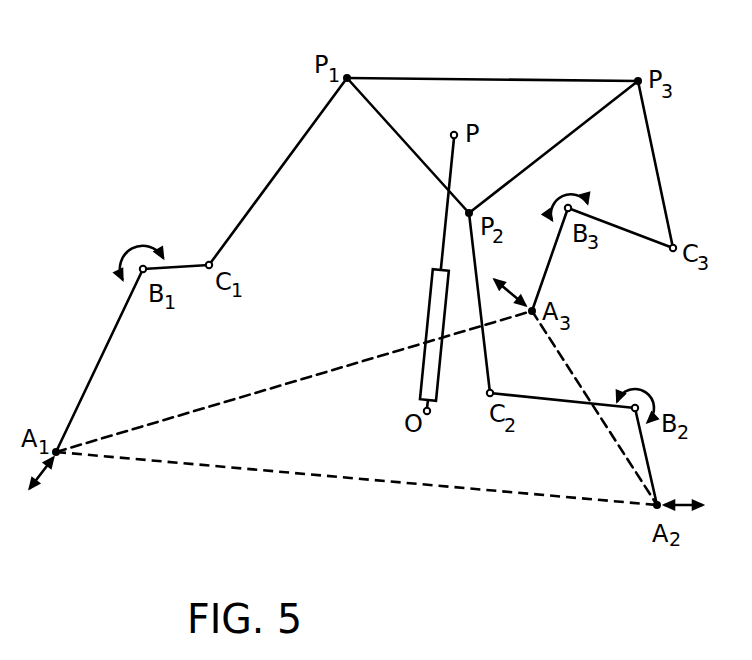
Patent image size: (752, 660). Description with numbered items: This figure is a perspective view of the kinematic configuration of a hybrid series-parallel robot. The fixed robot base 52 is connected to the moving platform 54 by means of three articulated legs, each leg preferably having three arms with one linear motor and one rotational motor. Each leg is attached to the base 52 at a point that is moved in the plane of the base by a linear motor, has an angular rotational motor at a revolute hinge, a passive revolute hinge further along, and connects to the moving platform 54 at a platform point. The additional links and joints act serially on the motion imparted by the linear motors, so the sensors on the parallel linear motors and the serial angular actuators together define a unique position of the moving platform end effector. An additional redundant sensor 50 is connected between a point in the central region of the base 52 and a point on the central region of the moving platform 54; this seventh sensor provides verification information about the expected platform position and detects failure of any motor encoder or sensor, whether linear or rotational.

The additional redundant sensor 50 is at (433, 272).
The fixed robot base 52 is at (477, 467).
The moving platform 54 is at (544, 94).